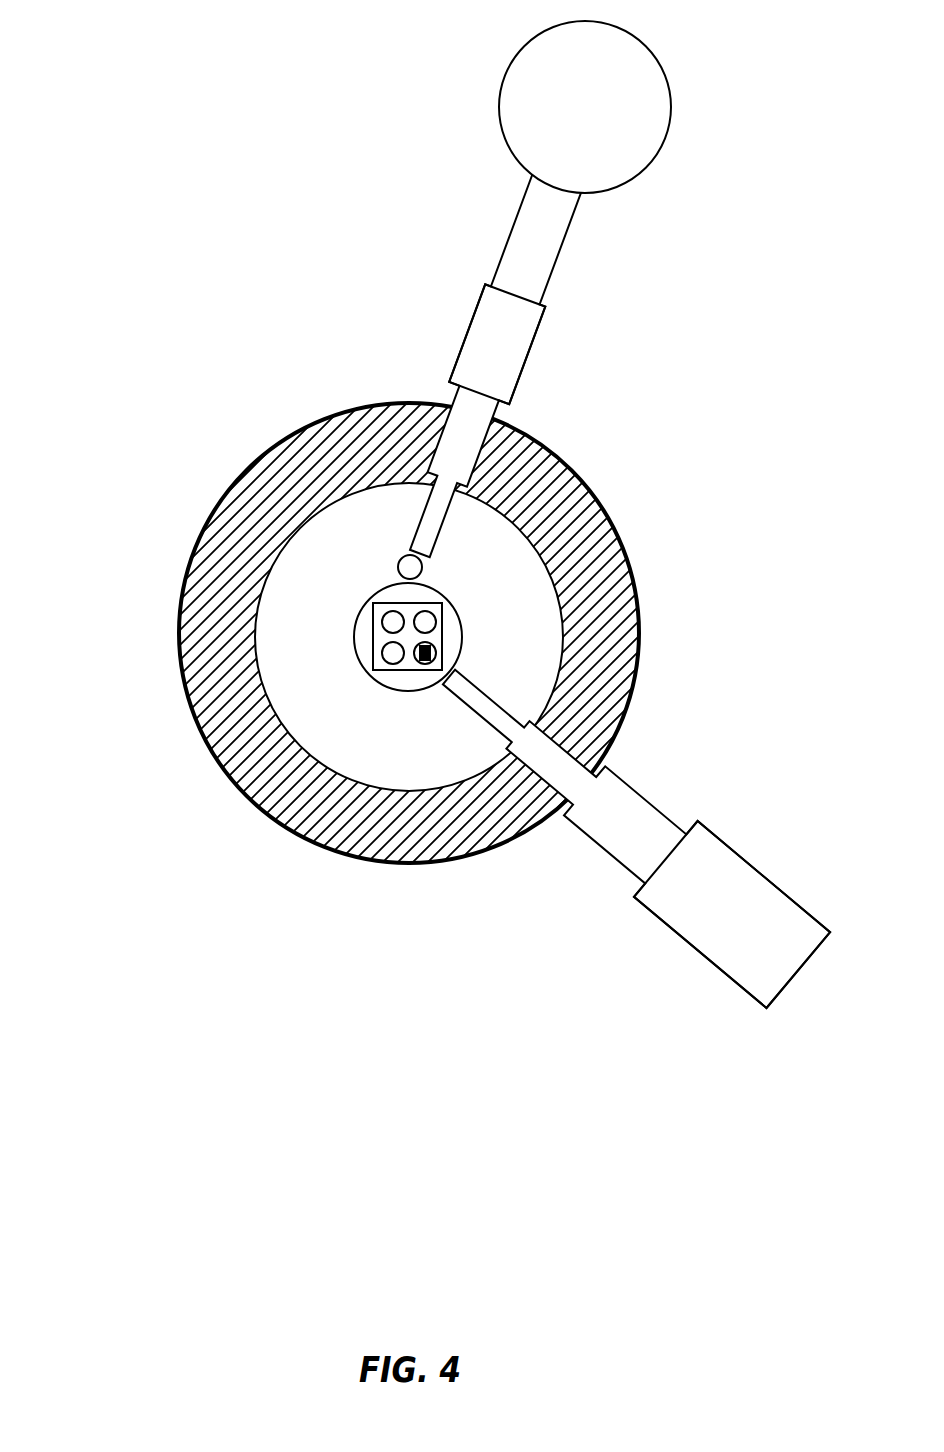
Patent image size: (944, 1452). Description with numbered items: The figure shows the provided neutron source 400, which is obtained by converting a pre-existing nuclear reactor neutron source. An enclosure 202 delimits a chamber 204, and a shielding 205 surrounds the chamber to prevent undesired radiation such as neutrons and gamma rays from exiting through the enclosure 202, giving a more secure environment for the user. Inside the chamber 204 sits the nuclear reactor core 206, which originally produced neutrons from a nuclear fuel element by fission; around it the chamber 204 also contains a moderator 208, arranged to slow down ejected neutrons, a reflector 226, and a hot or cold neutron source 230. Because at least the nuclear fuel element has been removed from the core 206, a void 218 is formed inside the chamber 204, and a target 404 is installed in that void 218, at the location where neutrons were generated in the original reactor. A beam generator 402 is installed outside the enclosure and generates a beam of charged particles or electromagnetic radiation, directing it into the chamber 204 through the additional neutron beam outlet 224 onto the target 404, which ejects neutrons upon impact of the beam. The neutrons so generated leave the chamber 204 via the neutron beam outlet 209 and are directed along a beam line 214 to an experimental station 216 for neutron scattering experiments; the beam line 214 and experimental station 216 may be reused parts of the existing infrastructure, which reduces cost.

The neutron source 400 is at (192, 268).
The enclosure 202 is at (472, 627).
The chamber 204 is at (472, 633).
The shielding 205 is at (233, 665).
The reflector 226 is at (293, 610).
The nuclear reactor core 206 is at (454, 609).
The moderator 208 is at (578, 598).
The void 218 is at (594, 612).
The target 404 is at (594, 628).
The hot or cold neutron source 230 is at (403, 566).
The beam line 214 is at (510, 365).
The experimental station 216 is at (670, 127).
The neutron beam outlet 209 is at (540, 323).
The additional neutron beam outlet 224 is at (636, 839).
The beam generator 402 is at (732, 848).